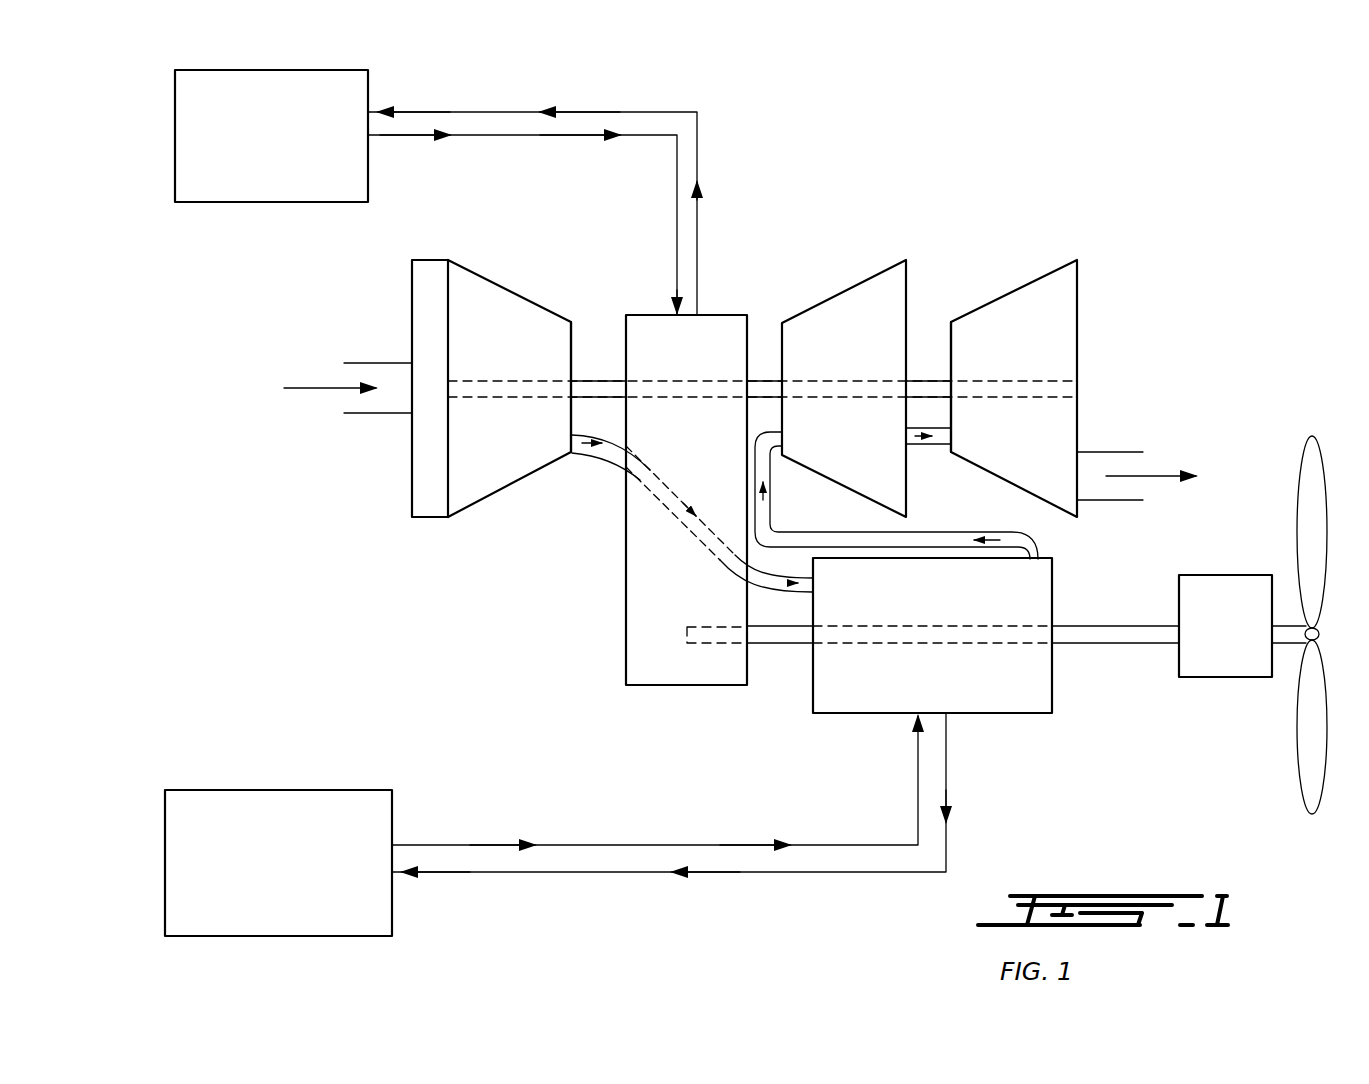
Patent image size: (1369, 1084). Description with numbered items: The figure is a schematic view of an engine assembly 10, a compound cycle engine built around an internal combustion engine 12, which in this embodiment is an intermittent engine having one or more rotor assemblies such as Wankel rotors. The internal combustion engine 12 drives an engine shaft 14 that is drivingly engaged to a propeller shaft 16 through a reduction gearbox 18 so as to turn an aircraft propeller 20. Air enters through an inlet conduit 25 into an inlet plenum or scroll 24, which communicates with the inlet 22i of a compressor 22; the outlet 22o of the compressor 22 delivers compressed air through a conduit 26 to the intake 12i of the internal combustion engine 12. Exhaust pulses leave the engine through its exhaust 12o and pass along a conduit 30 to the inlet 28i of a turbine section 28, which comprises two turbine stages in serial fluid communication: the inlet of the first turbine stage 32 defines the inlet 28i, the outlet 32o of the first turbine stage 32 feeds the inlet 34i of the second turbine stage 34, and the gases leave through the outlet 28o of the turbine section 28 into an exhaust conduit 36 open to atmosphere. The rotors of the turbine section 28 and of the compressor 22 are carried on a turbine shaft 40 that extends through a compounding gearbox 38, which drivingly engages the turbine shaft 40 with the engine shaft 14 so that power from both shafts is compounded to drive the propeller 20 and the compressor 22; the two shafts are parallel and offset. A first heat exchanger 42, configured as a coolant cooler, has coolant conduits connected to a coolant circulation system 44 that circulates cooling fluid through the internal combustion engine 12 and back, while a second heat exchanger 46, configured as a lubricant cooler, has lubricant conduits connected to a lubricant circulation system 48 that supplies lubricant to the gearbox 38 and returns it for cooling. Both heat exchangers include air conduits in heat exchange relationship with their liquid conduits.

The engine assembly 10 is at (905, 165).
The internal combustion engine 12 is at (1052, 695).
The intake 12i is at (807, 576).
The exhaust 12o is at (1040, 553).
The engine shaft 14 is at (780, 645).
The propeller shaft 16 is at (1285, 628).
The reduction gearbox 18 is at (1222, 657).
The aircraft propeller 20 is at (1312, 450).
The compressor 22 is at (510, 378).
The inlet of the compressor 22i is at (430, 522).
The outlet of the compressor 22o is at (572, 455).
The inlet plenum or scroll 24 is at (431, 258).
The inlet conduit 25 is at (333, 403).
The conduit 26 is at (697, 513).
The turbine section 28 is at (980, 285).
The inlet of the turbine section 28i is at (772, 440).
The outlet of the turbine section 28o is at (1085, 452).
The conduit 30 is at (959, 493).
The first turbine stage 32 is at (810, 305).
The outlet of the first turbine stage 32o is at (910, 428).
The second turbine stage 34 is at (1060, 374).
The inlet of the second turbine stage 34i is at (955, 434).
The exhaust conduit 36 is at (1128, 465).
The compounding gearbox 38 is at (667, 702).
The turbine shaft 40 is at (596, 368).
The first heat exchanger 42 is at (200, 858).
The coolant circulation system 44 is at (845, 872).
The second heat exchanger 46 is at (200, 133).
The lubricant circulation system 48 is at (468, 110).